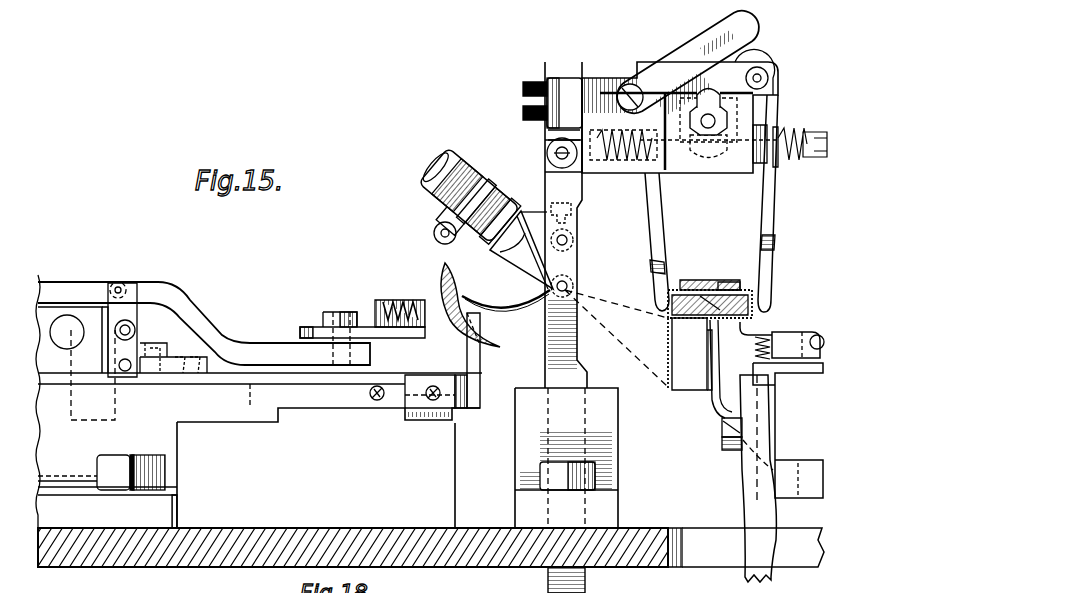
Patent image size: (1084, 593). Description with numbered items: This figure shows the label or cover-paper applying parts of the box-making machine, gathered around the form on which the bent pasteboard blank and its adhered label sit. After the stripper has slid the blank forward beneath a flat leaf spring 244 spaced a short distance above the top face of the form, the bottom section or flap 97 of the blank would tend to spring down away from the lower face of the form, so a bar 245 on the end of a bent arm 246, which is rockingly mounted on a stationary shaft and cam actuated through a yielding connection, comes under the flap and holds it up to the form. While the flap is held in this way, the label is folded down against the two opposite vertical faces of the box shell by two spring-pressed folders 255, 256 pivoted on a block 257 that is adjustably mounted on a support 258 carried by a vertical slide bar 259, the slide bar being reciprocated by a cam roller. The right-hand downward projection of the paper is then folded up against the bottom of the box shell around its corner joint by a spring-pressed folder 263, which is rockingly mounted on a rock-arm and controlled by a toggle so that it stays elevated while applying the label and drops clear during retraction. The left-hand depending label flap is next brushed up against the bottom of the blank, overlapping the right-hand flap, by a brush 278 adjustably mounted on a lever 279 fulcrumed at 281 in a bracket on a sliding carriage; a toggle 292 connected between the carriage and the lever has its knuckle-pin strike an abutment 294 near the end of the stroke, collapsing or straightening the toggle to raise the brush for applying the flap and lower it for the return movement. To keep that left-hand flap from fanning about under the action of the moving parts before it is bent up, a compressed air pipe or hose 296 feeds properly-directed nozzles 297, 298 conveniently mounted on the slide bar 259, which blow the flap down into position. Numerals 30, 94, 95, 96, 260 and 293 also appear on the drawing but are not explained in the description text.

The clamp top plate 30 is at (700, 282).
The clamp block 94 is at (752, 306).
The clamp insert 95 is at (727, 284).
The plate edge 96 is at (668, 313).
The bottom section or flap 97 is at (690, 327).
The flat leaf spring 244 is at (713, 280).
The bar 245 is at (705, 365).
The bent arm 246 is at (716, 412).
The spring-pressed folder 255 is at (651, 215).
The spring-pressed folder 256 is at (773, 226).
The block 257 is at (742, 62).
The support 258 is at (545, 80).
The vertical slide bar 259 is at (420, 434).
The bracket 260 is at (781, 472).
The spring-pressed folder 263 is at (760, 335).
The brush 278 is at (405, 300).
The lever 279 is at (240, 340).
The fulcrum 281 is at (70, 325).
The toggle 292 is at (128, 308).
The link pivot 293 is at (136, 330).
The abutment 294 is at (468, 355).
The compressed air pipe or hose 296 is at (472, 174).
The nozzle 297 is at (520, 252).
The nozzle 298 is at (490, 340).